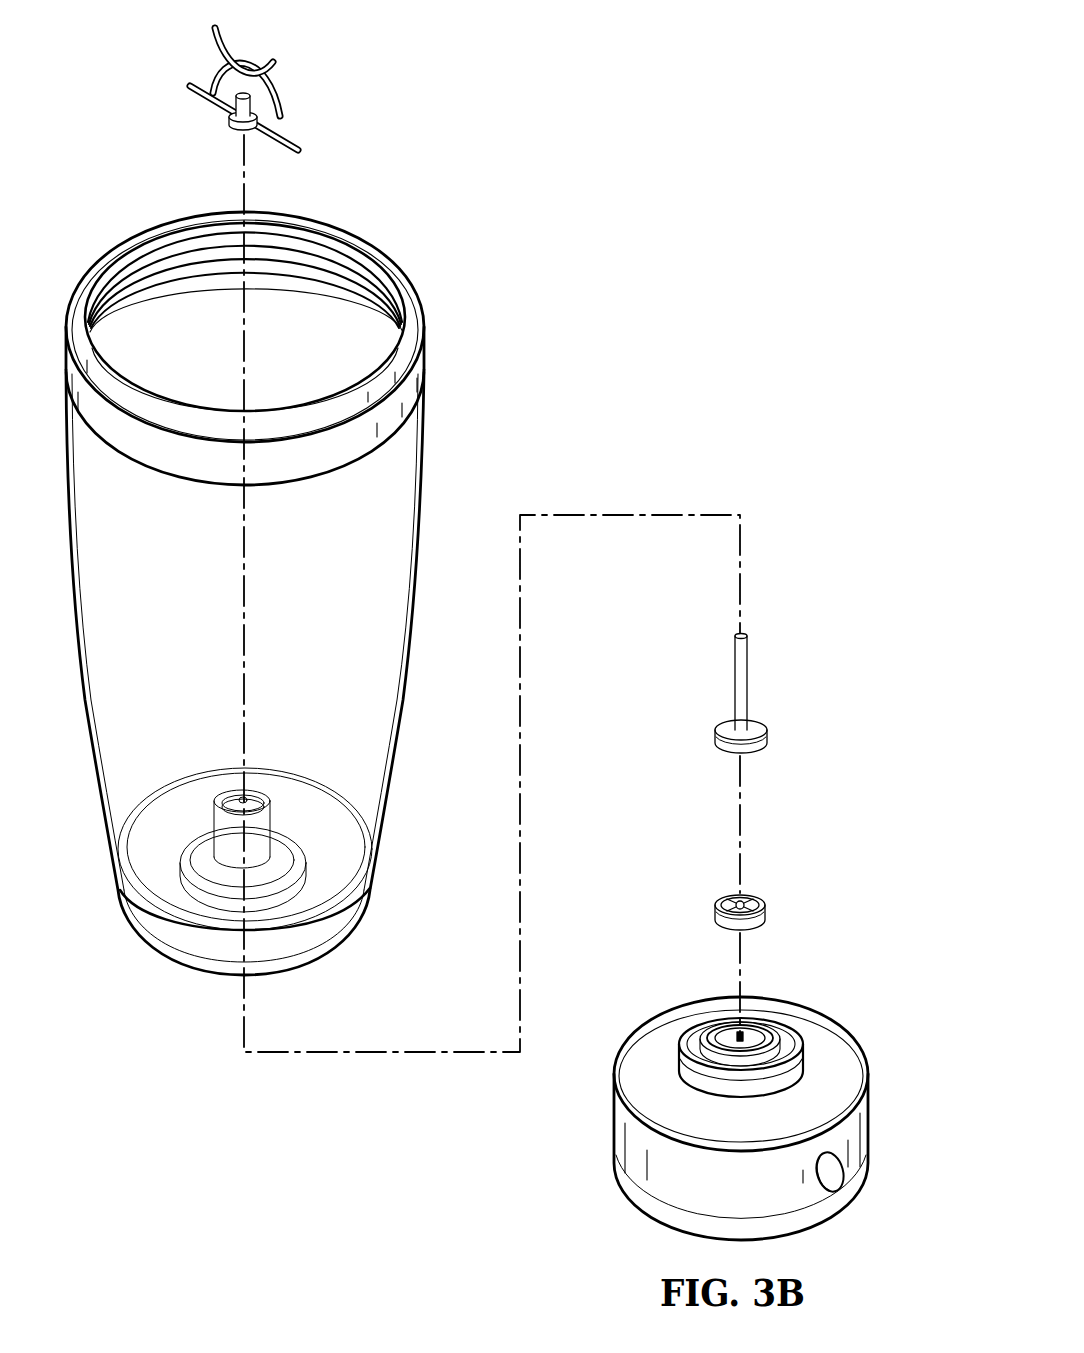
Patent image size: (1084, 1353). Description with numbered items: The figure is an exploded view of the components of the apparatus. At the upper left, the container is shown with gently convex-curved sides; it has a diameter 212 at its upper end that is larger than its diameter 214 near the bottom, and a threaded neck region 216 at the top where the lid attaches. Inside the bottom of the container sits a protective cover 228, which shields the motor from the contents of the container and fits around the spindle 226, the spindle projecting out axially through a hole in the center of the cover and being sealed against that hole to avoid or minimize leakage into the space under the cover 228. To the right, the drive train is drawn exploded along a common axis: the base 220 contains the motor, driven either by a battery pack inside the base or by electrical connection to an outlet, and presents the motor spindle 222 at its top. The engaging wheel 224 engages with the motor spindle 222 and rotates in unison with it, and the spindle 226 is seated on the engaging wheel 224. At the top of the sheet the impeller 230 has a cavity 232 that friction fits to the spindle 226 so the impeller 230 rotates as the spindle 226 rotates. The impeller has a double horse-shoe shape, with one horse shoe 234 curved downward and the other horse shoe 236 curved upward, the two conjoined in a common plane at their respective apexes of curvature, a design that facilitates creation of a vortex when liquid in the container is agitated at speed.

The diameter 212 is at (286, 593).
The diameter 214 is at (146, 899).
The threaded neck 216 is at (449, 273).
The base 220 is at (778, 1095).
The motor spindle 222 is at (750, 1040).
The engaging wheel 224 is at (765, 912).
The spindle 226 is at (748, 680).
The protective cover 228 is at (210, 823).
The impeller 230 is at (277, 100).
The cavity 232 is at (231, 137).
The horse shoe 234 is at (220, 72).
The horse shoe 236 is at (222, 31).